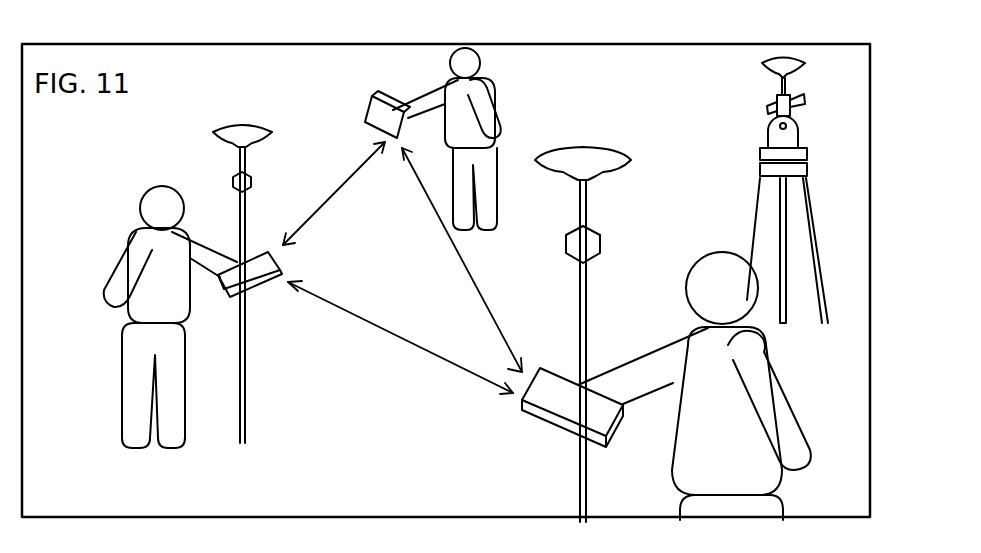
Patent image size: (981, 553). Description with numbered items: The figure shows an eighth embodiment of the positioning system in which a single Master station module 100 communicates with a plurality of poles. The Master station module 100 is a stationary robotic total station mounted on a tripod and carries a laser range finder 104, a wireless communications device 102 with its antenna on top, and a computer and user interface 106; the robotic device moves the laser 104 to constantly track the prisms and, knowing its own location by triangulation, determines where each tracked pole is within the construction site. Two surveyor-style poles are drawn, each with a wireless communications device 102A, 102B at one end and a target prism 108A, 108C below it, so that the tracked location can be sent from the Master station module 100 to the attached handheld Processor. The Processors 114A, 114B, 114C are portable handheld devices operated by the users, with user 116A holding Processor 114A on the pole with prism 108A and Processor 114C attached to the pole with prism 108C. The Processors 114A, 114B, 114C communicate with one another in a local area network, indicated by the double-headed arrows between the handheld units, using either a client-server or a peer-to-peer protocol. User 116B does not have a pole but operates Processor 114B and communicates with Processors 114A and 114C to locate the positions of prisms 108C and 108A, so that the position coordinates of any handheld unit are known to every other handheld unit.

The Master station module 100 is at (732, 121).
The wireless communications device 102 is at (806, 62).
The laser range finder 104 is at (805, 98).
The computer and user interface 106 is at (798, 140).
The wireless communications device 102A is at (633, 159).
The wireless communications device 102B is at (242, 125).
The prism 108A is at (602, 238).
The prism 108C is at (251, 181).
The Processor 114A is at (536, 418).
The Processor 114B is at (379, 90).
The Processor 114C is at (283, 263).
The user 116A is at (790, 389).
The user 116B is at (492, 91).